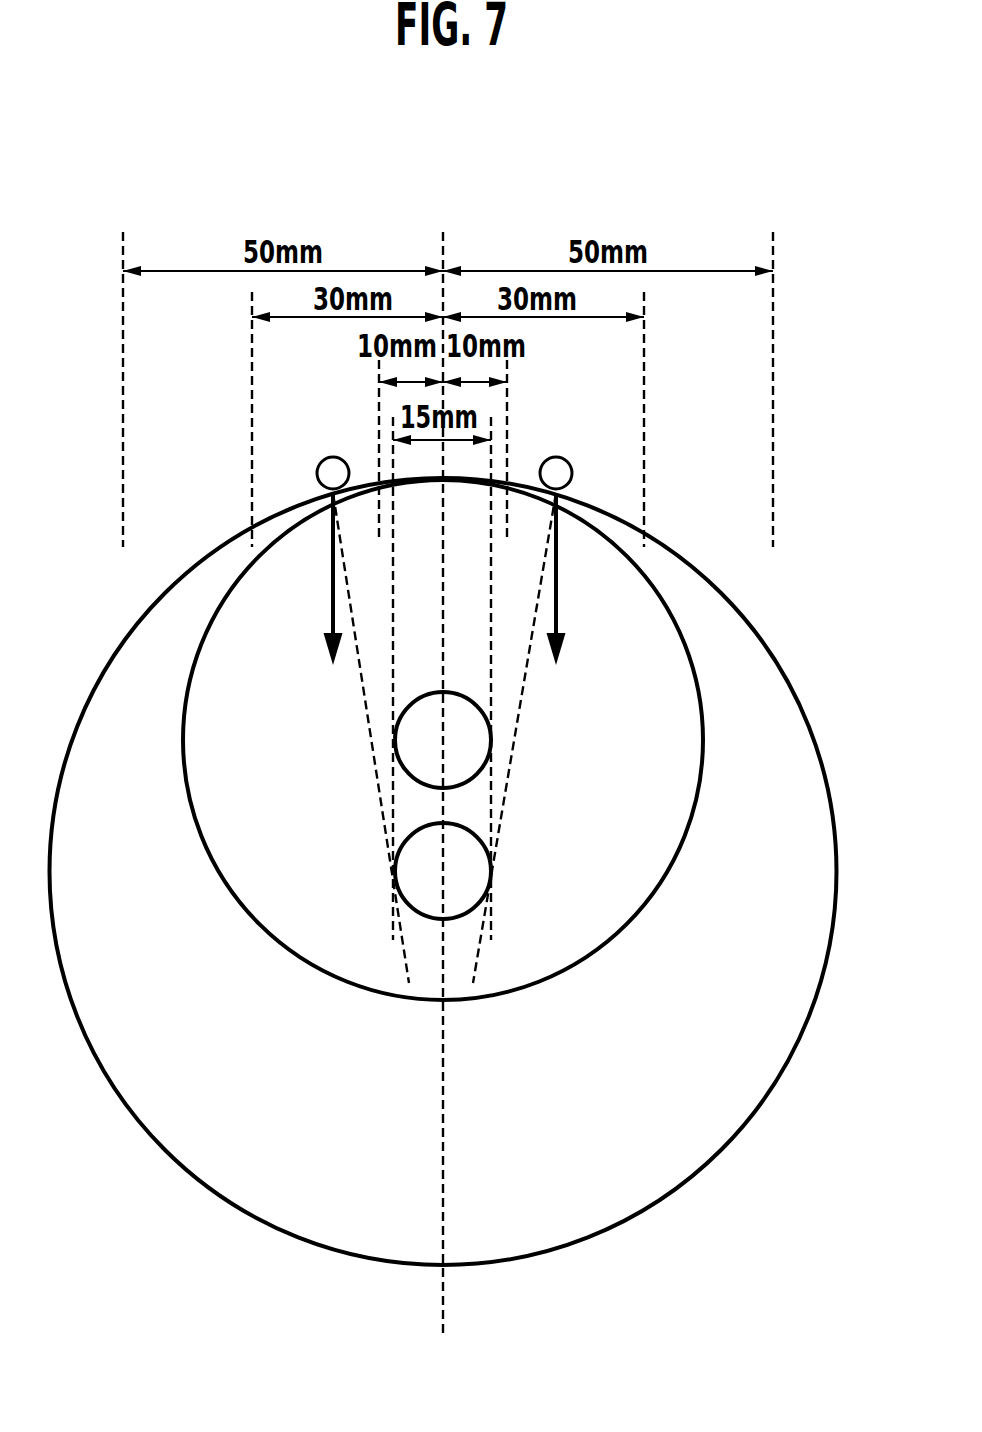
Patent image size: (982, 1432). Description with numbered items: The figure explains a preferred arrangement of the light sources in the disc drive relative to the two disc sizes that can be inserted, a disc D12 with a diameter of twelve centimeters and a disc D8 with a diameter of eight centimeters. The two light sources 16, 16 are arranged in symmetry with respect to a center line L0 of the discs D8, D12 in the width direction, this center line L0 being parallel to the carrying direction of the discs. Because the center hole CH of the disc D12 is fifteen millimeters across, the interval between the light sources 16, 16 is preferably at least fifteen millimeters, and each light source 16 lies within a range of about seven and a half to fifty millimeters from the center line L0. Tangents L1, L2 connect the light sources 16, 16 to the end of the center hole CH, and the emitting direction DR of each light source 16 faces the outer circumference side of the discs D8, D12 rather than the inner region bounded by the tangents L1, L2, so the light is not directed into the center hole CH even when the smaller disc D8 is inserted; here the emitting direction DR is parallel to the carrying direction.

The light source 16 is at (333, 457).
The emitting direction DR is at (444, 579).
The tangent L1 is at (520, 718).
The tangent L2 is at (370, 720).
The center line L0 is at (443, 1117).
The center hole CH is at (490, 757).
The disc D8 is at (663, 846).
The disc D12 is at (782, 1040).